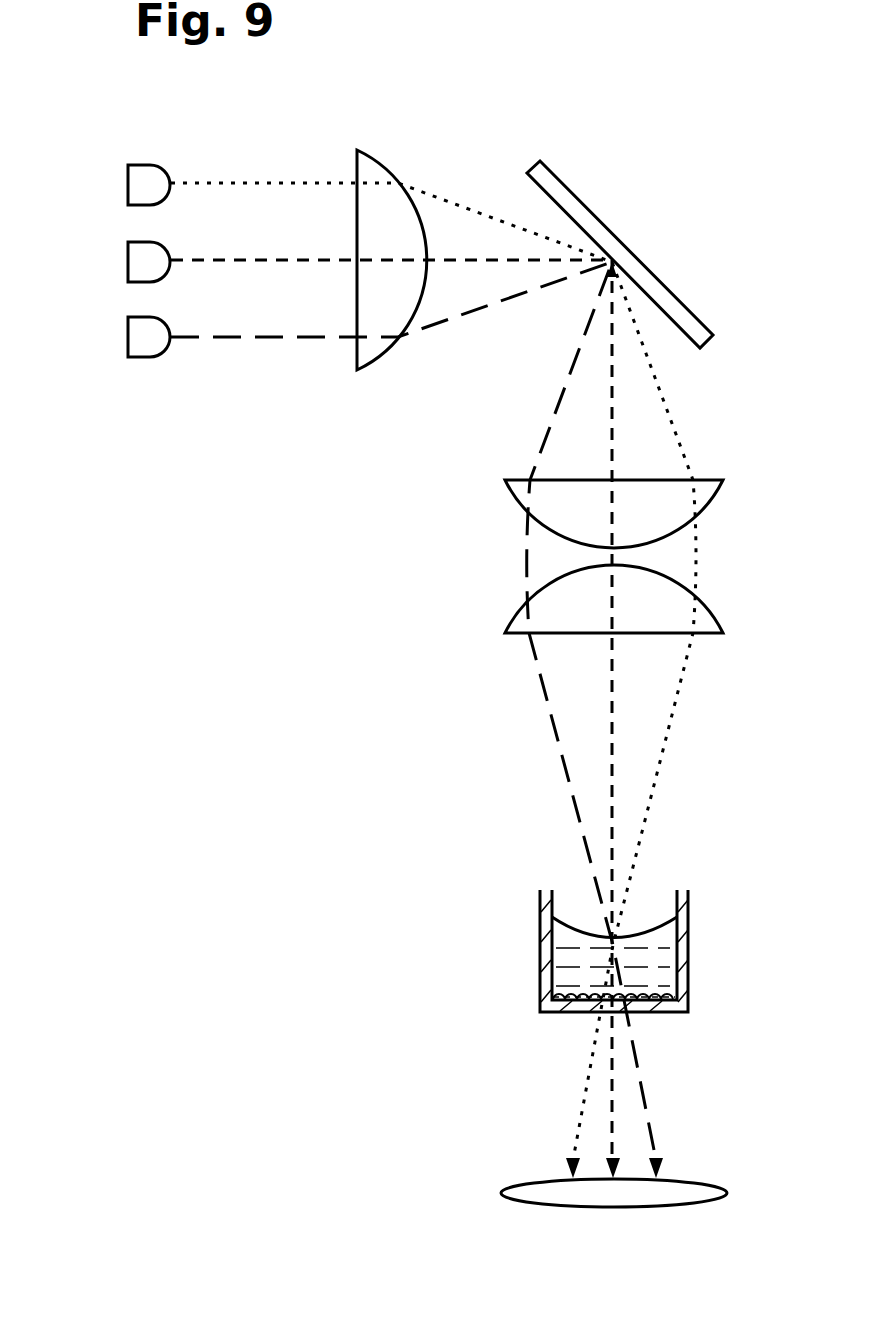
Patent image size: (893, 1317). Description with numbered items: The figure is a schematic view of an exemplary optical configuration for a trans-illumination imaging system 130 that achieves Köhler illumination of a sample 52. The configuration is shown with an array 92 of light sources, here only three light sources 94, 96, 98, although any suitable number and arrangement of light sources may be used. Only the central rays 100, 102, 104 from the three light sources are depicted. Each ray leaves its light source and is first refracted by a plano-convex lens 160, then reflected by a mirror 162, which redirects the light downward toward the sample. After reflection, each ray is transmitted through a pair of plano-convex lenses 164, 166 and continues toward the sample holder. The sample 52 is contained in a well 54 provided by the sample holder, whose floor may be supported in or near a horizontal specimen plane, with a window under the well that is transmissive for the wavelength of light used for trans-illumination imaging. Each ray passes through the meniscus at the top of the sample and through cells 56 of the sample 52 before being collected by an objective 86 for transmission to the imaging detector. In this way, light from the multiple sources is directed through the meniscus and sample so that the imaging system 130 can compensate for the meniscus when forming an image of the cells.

The array of light sources 92 is at (124, 128).
The light source 94 is at (127, 337).
The light source 96 is at (127, 261).
The light source 98 is at (127, 184).
The ray 100 is at (230, 337).
The ray 102 is at (230, 260).
The ray 104 is at (230, 183).
The imaging system 130 is at (643, 122).
The plano-convex lens 160 is at (388, 348).
The mirror 162 is at (538, 195).
The plano-convex lens 164 is at (512, 498).
The plano-convex lens 166 is at (517, 612).
The well 54 is at (555, 897).
The sample 52 is at (637, 930).
The cells 56 is at (648, 996).
The objective 86 is at (694, 1205).